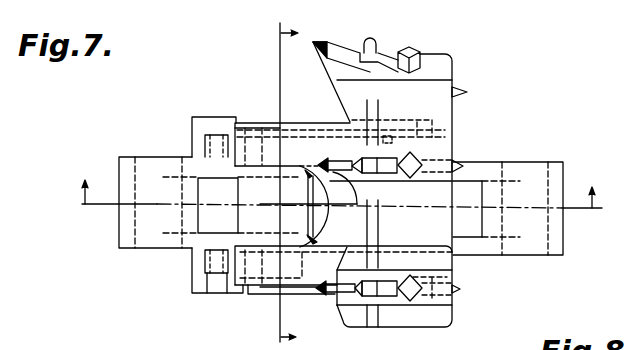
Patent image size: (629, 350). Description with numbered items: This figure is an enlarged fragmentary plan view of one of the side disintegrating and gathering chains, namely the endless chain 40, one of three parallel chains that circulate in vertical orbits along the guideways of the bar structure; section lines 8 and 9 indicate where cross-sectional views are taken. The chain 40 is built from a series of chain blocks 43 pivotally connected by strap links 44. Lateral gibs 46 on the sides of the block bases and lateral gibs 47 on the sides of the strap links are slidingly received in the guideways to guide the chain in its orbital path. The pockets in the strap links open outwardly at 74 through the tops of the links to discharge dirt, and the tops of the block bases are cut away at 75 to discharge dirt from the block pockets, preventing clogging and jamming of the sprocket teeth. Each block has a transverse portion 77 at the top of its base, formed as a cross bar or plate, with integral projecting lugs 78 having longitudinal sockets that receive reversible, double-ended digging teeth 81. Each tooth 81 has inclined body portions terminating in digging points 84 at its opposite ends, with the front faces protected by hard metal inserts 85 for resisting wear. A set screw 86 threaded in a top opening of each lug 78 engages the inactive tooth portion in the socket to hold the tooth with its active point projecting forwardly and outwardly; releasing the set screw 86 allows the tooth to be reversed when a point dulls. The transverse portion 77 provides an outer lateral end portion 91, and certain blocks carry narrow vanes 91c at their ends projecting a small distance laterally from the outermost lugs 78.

The section line 8- 8 is at (341, 182).
The section line 9- 9 is at (295, 185).
The endless chain 40 is at (500, 158).
The chain block 43 is at (297, 120).
The strap link 44 is at (153, 157).
The lateral gib 46 is at (273, 121).
The lateral gib 47 is at (213, 123).
The pocket opening 74 is at (207, 228).
The cut-away portion 75 is at (307, 240).
The transverse portion 77 is at (453, 106).
The projecting lug 78 is at (443, 55).
The digging tooth 81 is at (335, 68).
The digging point 84 is at (318, 46).
The hard metal insert 85 is at (325, 41).
The set screw 86 is at (410, 49).
The outer lateral end portion 91 is at (360, 52).
The narrow vane 91c is at (377, 44).